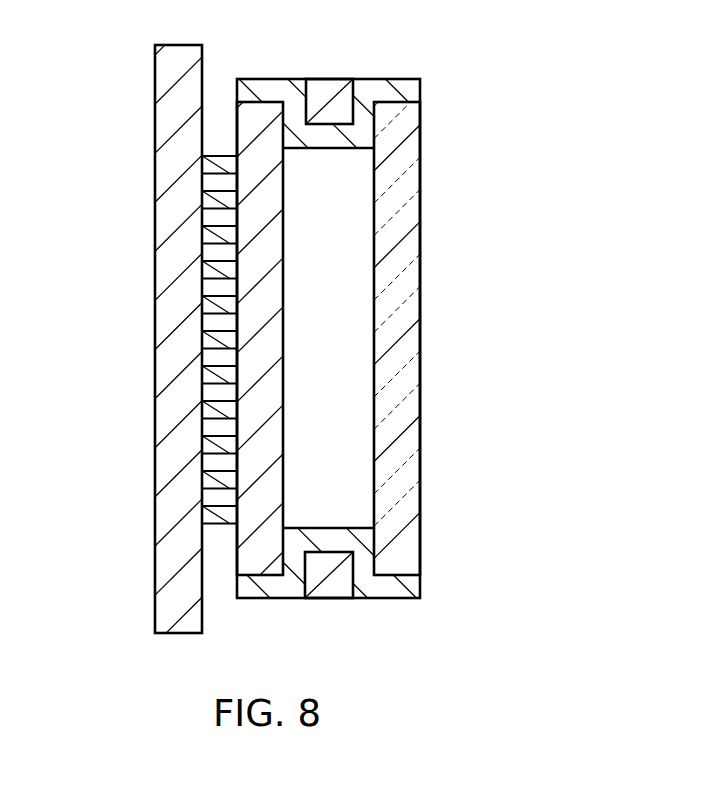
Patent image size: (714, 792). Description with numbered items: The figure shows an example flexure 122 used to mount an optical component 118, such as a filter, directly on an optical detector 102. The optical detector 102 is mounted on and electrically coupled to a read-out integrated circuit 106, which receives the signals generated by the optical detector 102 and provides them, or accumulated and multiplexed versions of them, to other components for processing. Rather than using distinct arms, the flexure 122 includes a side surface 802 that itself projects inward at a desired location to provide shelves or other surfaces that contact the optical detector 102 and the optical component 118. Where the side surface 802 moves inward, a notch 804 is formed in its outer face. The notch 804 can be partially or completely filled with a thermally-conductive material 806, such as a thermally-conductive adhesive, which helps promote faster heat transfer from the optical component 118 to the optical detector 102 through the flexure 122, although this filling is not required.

The read-out integrated circuit 106 is at (165, 327).
The optical detector 102 is at (273, 335).
The optical component 118 is at (408, 363).
The flexure 122 is at (373, 88).
The side surface 802 is at (433, 585).
The notch 804 is at (361, 354).
The thermally-conductive material 806 is at (328, 590).